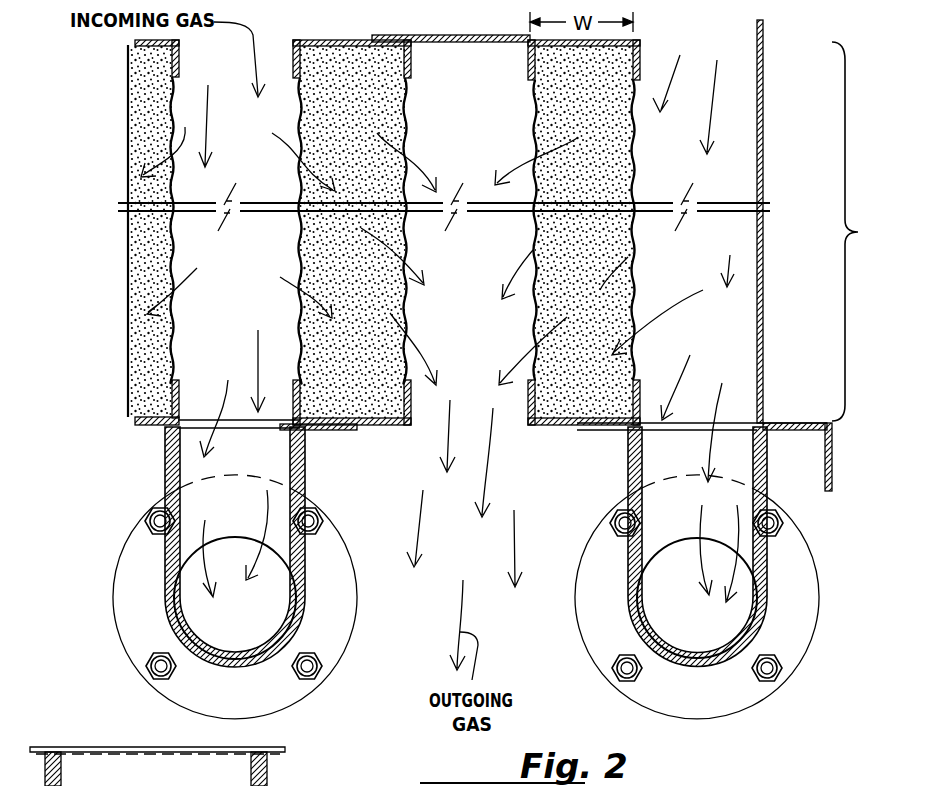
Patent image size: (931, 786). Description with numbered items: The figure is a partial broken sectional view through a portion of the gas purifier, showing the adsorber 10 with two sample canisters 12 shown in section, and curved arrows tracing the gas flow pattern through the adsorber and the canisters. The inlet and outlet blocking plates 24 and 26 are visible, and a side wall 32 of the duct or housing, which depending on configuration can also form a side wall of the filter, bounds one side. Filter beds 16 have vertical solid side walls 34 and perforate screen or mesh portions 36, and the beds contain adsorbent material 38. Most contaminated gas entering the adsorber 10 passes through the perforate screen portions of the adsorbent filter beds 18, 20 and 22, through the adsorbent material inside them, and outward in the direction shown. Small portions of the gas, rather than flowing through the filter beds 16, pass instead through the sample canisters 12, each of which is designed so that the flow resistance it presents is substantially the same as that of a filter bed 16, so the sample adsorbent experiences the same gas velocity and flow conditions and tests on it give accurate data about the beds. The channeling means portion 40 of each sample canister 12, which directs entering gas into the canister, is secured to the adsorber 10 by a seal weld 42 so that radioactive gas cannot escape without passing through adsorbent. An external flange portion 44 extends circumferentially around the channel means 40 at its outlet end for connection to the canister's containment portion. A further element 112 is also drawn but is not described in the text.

The adsorber 10 is at (859, 231).
The sample canister 12 is at (305, 606).
The filter bed 16 is at (178, 354).
The adsorbent filter bed 18 is at (410, 140).
The adsorbent filter bed 20 is at (174, 336).
The adsorbent filter bed 22 is at (640, 284).
The inlet blocking plate 24 is at (452, 36).
The outlet blocking plate 26 is at (338, 430).
The side wall 32 is at (763, 24).
The vertical solid side wall 34 is at (630, 44).
The perforate screen or mesh portion 36 is at (176, 122).
The adsorbent material 38 is at (148, 115).
The channeling means portion 40 is at (175, 472).
The seal weld 42 is at (165, 433).
The external flange portion 44 is at (128, 650).
The bottom support plate 112 is at (276, 748).